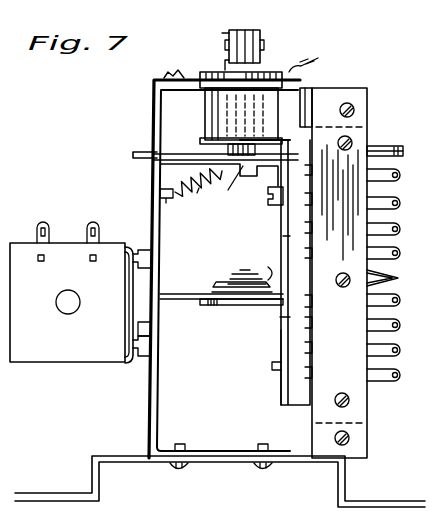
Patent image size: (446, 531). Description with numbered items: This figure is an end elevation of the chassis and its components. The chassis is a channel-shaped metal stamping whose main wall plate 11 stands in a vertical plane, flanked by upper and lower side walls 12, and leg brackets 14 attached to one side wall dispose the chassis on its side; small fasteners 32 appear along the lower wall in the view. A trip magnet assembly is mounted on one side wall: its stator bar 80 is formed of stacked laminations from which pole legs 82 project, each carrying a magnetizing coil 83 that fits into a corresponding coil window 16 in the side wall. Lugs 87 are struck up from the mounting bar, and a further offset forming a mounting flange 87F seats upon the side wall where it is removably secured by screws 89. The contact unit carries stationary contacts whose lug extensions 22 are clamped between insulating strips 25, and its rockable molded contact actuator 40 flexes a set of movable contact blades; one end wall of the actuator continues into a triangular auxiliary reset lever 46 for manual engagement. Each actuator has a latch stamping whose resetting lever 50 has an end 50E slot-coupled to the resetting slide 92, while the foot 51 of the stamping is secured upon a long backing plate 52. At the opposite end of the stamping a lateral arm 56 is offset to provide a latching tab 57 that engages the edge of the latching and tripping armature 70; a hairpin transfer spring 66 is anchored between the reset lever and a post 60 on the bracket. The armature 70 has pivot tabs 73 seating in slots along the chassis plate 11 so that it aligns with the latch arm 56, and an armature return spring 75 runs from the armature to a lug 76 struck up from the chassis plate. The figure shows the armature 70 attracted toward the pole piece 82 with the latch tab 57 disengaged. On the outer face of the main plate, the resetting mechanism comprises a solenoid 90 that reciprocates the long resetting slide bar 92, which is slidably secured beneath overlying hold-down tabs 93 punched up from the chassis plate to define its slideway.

The main wall plate 11 is at (151, 184).
The side walls 12 is at (300, 85).
The leg brackets 14 is at (55, 490).
The coil windows 16 is at (292, 107).
The lug extensions 22 is at (400, 256).
The insulating strips 25 is at (358, 272).
The rivets 32 is at (220, 447).
The contact actuator 40 is at (288, 337).
The auxiliary reset lever 46 is at (380, 150).
The resetting lever 50 is at (216, 289).
The resetting lever end 50E is at (153, 277).
The foot of latch stamping 51 is at (277, 234).
The backing plate 52 is at (273, 318).
The lateral arm 56 is at (270, 193).
The latching tab 57 is at (219, 186).
The post 60 is at (240, 302).
The transfer spring 66 is at (245, 275).
The armature 70 is at (181, 159).
The pivot tabs 73 is at (143, 151).
The armature return spring 75 is at (194, 200).
The lug 76 is at (176, 188).
The stator bar 80 is at (268, 22).
The pole legs 82 is at (257, 153).
The magnetizing coil 83 is at (212, 104).
The lugs 87 is at (213, 43).
The mounting flange 87F is at (158, 72).
The screws 89 is at (204, 72).
The solenoid 90 is at (82, 285).
The resetting slide 92 is at (137, 340).
The hold-down tabs 93 is at (145, 250).